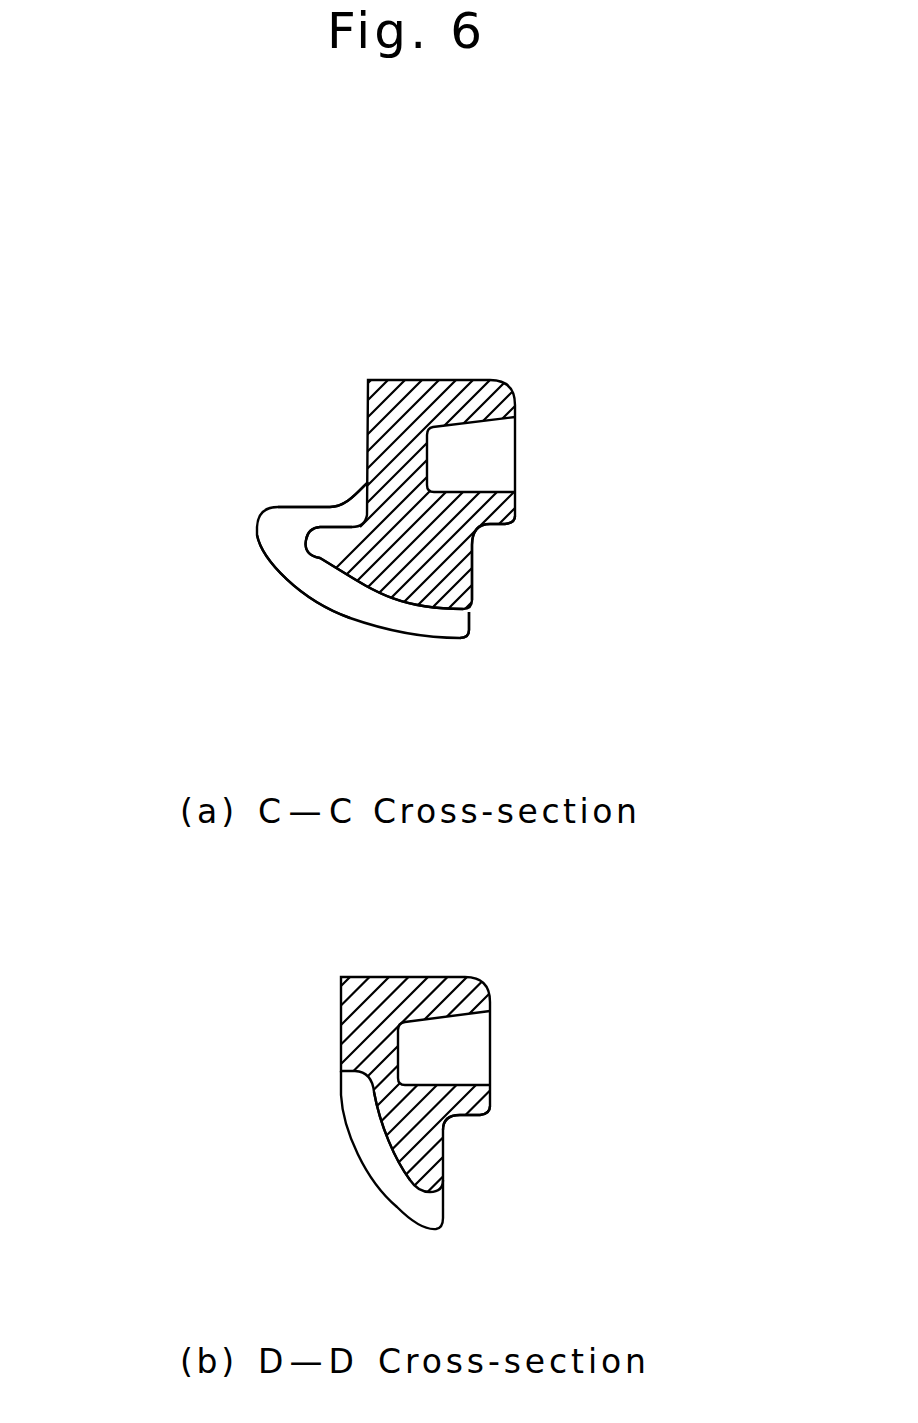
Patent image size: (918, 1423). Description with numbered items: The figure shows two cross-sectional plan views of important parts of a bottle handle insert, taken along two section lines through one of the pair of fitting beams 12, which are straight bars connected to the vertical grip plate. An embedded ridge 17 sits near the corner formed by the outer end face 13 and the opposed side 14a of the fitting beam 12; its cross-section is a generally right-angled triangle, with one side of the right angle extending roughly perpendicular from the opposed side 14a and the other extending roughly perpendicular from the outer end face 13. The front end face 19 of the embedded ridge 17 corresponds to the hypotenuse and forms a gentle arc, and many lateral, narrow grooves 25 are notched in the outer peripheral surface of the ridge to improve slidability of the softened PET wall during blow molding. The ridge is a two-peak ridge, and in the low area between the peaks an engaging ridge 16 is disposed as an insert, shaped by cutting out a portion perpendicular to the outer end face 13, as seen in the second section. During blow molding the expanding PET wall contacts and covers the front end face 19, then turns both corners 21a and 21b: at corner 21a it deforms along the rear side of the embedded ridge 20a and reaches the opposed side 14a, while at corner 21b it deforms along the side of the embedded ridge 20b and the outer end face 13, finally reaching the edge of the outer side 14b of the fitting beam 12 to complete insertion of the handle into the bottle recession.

The fitting beam 12 is at (508, 387).
The outer end face 13 is at (367, 432).
The opposed side 14a is at (497, 525).
The outer side 14b is at (427, 380).
The engaging ridge 16 is at (405, 1118).
The embedded ridge 17 is at (370, 566).
The front end face 19 is at (343, 620).
The rear side of the embedded ridge 20a is at (473, 565).
The side of the embedded ridge 20b is at (297, 505).
The corner 21a is at (470, 636).
The corner 21b is at (253, 525).
The lateral narrow groove 25 is at (397, 607).